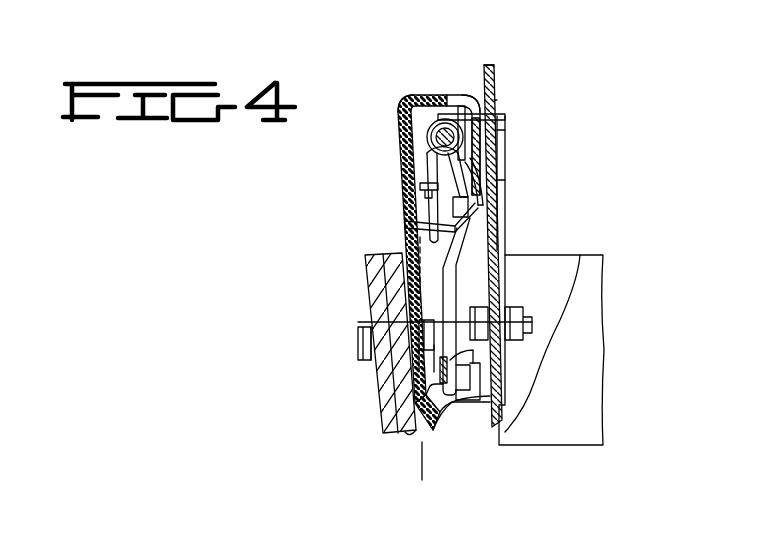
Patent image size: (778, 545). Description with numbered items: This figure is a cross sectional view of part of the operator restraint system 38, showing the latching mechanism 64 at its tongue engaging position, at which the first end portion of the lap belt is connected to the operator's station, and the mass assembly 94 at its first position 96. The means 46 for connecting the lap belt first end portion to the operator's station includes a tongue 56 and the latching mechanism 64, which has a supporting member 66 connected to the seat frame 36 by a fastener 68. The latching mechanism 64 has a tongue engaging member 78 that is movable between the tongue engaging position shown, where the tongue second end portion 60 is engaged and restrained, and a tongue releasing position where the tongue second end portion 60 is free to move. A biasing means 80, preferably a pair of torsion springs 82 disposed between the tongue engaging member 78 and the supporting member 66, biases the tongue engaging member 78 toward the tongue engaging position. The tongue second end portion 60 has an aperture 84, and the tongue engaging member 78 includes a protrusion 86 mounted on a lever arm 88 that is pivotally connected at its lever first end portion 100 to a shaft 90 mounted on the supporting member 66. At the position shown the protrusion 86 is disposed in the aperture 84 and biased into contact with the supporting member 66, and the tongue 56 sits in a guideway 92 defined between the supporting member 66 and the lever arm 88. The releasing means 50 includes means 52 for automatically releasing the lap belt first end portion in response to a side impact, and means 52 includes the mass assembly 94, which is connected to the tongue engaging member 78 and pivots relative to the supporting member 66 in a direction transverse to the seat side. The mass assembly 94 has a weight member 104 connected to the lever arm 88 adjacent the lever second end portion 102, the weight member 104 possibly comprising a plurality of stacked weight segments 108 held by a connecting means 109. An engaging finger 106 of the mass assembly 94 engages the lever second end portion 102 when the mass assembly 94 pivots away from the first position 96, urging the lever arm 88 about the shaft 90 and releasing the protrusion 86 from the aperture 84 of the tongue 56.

The seat frame 36 is at (592, 430).
The operator restraint system 38 is at (391, 48).
The means for connecting the lap belt first end portion 46 is at (572, 134).
The means for releasing 50 is at (528, 46).
The means for automatically releasing the lap belt first end portion 52 is at (320, 418).
The tongue 56 is at (498, 76).
The tongue second end portion 60 is at (504, 215).
The latching mechanism 64 is at (504, 112).
The supporting member 66 is at (504, 182).
The fastener 68 is at (522, 310).
The tongue engaging member 78 is at (505, 118).
The means for biasing 80 is at (422, 161).
The torsion springs 82 is at (490, 166).
The aperture 84 is at (496, 160).
The protrusion 86 is at (504, 193).
The lever arm 88 is at (505, 262).
The shaft 90 is at (403, 122).
The guideway 92 is at (470, 88).
The mass assembly 94 is at (356, 325).
The first position 96 is at (414, 470).
The lever first end portion 100 is at (438, 134).
The lever second end portion 102 is at (500, 362).
The weight member 104 is at (392, 416).
The engaging finger 106 is at (500, 382).
The stacked weight segments 108 is at (402, 442).
The means for connecting the stacked weight segments 109 is at (356, 355).